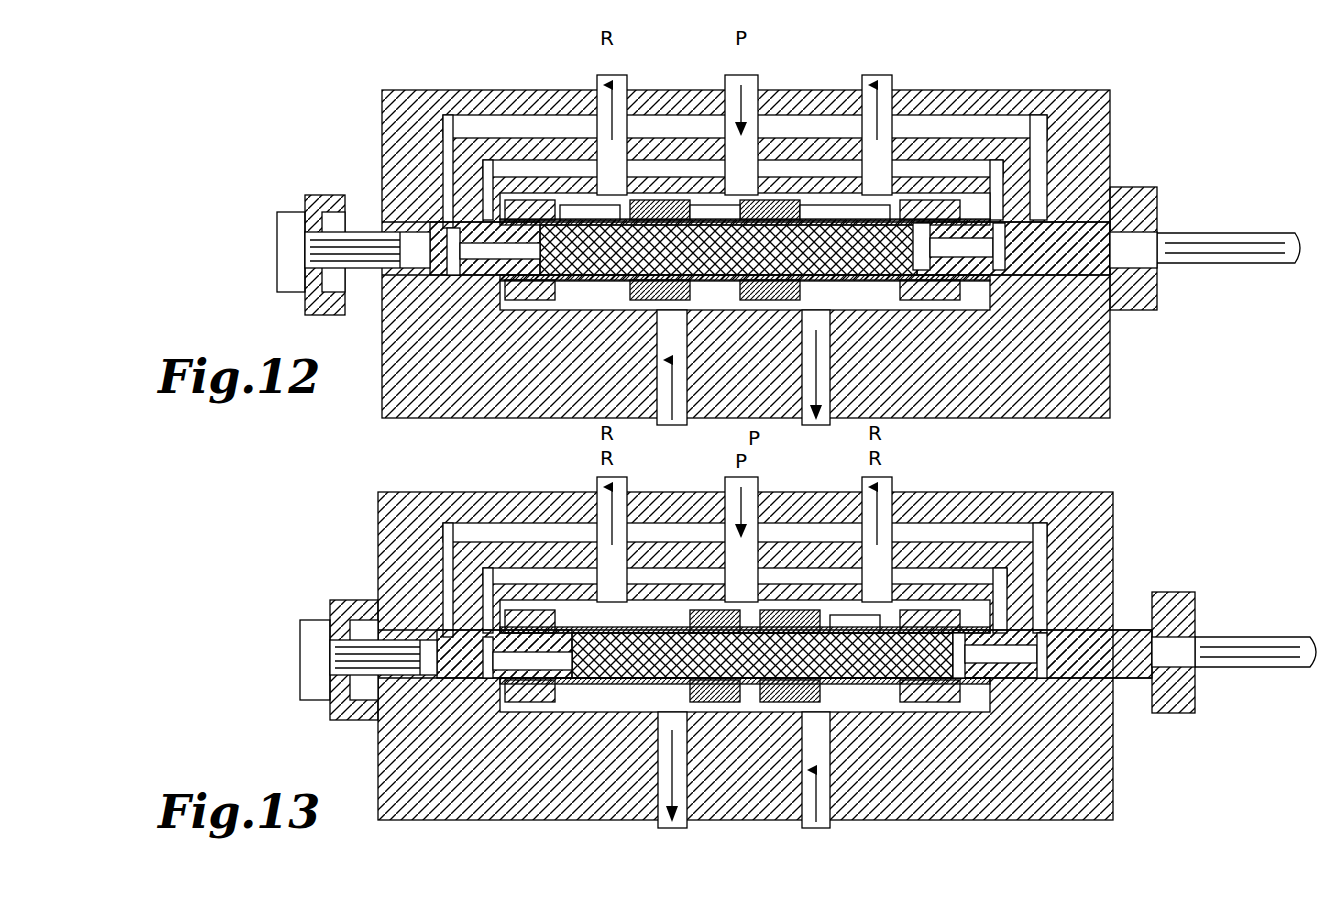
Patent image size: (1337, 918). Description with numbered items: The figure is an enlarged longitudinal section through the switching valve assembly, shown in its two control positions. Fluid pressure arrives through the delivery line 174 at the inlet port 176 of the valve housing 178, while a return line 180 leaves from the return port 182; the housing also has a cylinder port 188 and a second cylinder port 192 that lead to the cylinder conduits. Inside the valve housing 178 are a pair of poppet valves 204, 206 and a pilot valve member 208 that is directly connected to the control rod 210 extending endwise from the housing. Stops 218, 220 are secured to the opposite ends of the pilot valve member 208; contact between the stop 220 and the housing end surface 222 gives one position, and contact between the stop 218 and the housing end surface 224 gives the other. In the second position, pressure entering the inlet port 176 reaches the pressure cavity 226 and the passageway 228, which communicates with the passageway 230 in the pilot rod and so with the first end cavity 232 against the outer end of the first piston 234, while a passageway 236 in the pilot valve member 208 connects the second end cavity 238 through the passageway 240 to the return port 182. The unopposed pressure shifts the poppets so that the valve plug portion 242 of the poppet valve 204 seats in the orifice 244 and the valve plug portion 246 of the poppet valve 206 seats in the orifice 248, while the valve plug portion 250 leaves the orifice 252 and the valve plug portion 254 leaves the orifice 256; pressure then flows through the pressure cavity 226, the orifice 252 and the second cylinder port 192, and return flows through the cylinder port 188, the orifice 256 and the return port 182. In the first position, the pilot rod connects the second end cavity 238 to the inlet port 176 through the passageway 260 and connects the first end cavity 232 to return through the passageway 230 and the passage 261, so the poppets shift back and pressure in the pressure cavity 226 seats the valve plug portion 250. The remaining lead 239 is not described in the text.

In FIG. 12, the delivery line 174 is at (725, 85).
In FIG. 12, the inlet port 176 is at (755, 82).
In FIG. 13, the inlet port 176 is at (758, 492).
In FIG. 12, the valve housing 178 is at (418, 98).
In FIG. 13, the valve housing 178 is at (385, 500).
In FIG. 12, the return line 180 is at (600, 95).
In FIG. 13, the return line 180 is at (597, 485).
In FIG. 12, the return port 182 is at (618, 82).
In FIG. 13, the return port 182 is at (628, 492).
In FIG. 12, the cylinder port 188 is at (805, 425).
In FIG. 13, the cylinder port 188 is at (830, 828).
In FIG. 12, the second cylinder port 192 is at (665, 425).
In FIG. 13, the second cylinder port 192 is at (658, 825).
In FIG. 12, the poppet valve 204 is at (620, 315).
In FIG. 12, the poppet valve 206 is at (940, 320).
In FIG. 12, the pilot valve member 208 is at (1060, 270).
In FIG. 13, the pilot valve member 208 is at (1140, 678).
In FIG. 12, the control rod 210 is at (1232, 263).
In FIG. 13, the control rod 210 is at (1270, 637).
In FIG. 12, the stop 218 is at (325, 195).
In FIG. 13, the stop 218 is at (335, 600).
In FIG. 12, the stop 220 is at (1150, 187).
In FIG. 13, the stop 220 is at (1168, 592).
In FIG. 12, the housing end surface 222 is at (1110, 142).
In FIG. 13, the housing end surface 222 is at (1113, 540).
In FIG. 13, the housing end surface 224 is at (378, 522).
In FIG. 12, the pressure cavity 226 is at (740, 300).
In FIG. 13, the pressure cavity 226 is at (780, 712).
In FIG. 13, the passageway 228 is at (485, 580).
In FIG. 12, the passageway 230 is at (460, 275).
In FIG. 13, the passageway 230 is at (480, 690).
In FIG. 12, the first end cavity 232 is at (545, 310).
In FIG. 13, the first end cavity 232 is at (510, 712).
In FIG. 12, the first piston 234 is at (518, 200).
In FIG. 13, the first piston 234 is at (560, 712).
In FIG. 12, the passageway 236 is at (1040, 290).
In FIG. 13, the passageway 236 is at (1060, 690).
In FIG. 12, the second end cavity 238 is at (1038, 160).
In FIG. 13, the second end cavity 238 is at (1025, 730).
In FIG. 12, the passage 239 is at (985, 300).
In FIG. 13, the passageway 240 is at (1040, 500).
In FIG. 12, the valve plug portion 242 is at (560, 205).
In FIG. 13, the valve plug portion 242 is at (660, 610).
In FIG. 12, the orifice 244 is at (630, 200).
In FIG. 13, the valve plug portion 246 is at (820, 612).
In FIG. 12, the orifice 248 is at (795, 205).
In FIG. 12, the valve plug portion 250 is at (700, 300).
In FIG. 13, the valve plug portion 250 is at (795, 795).
In FIG. 13, the orifice 252 is at (750, 712).
In FIG. 12, the valve plug portion 254 is at (850, 210).
In FIG. 13, the valve plug portion 254 is at (1000, 712).
In FIG. 13, the orifice 256 is at (850, 715).
In FIG. 12, the passageway 260 is at (996, 170).
In FIG. 12, the passage 261 is at (448, 145).